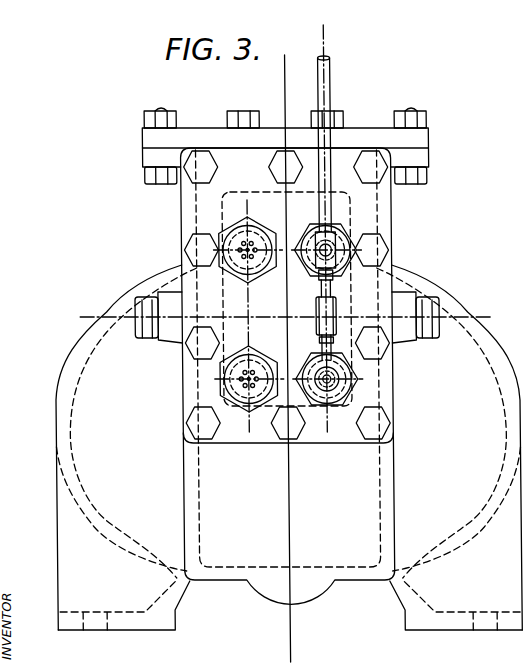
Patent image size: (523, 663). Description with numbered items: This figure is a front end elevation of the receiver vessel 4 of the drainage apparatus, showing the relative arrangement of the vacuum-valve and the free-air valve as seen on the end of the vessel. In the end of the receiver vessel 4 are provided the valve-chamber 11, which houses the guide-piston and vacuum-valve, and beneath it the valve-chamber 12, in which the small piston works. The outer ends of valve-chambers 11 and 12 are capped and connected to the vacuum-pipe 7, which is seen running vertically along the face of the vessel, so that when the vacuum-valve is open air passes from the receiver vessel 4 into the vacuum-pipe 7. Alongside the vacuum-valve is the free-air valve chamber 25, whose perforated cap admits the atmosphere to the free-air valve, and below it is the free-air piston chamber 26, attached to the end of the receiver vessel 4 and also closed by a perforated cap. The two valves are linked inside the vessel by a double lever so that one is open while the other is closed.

The receiver vessel 4 is at (287, 343).
The vacuum-pipe 7 is at (333, 175).
The valve-chamber 11 is at (337, 225).
The valve-chamber 12 is at (357, 370).
The free-air valve chamber 25 is at (226, 231).
The free-air piston chamber 26 is at (222, 386).